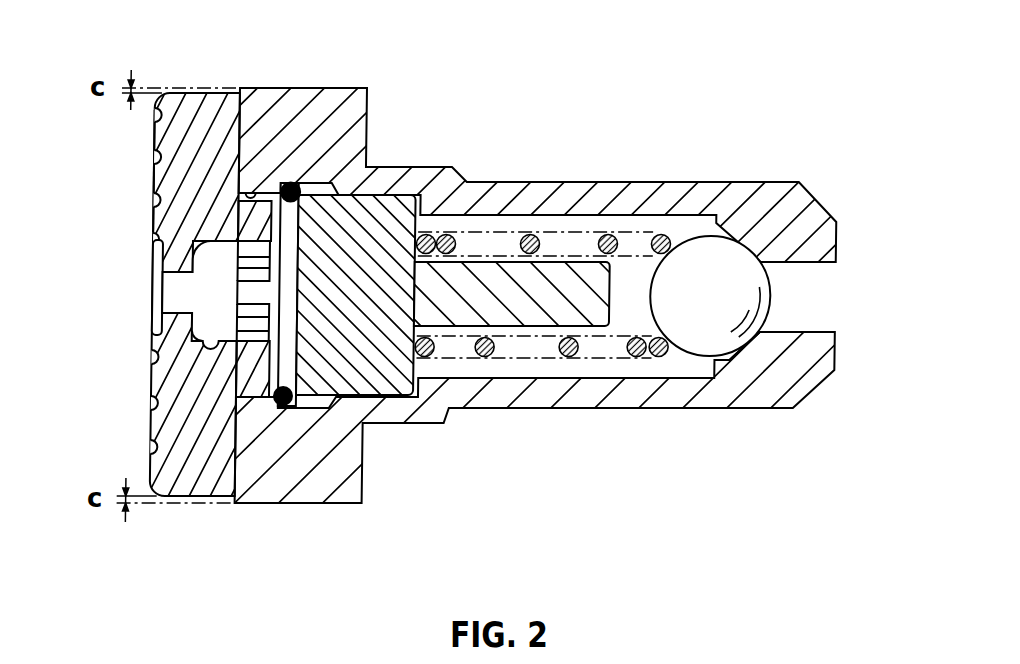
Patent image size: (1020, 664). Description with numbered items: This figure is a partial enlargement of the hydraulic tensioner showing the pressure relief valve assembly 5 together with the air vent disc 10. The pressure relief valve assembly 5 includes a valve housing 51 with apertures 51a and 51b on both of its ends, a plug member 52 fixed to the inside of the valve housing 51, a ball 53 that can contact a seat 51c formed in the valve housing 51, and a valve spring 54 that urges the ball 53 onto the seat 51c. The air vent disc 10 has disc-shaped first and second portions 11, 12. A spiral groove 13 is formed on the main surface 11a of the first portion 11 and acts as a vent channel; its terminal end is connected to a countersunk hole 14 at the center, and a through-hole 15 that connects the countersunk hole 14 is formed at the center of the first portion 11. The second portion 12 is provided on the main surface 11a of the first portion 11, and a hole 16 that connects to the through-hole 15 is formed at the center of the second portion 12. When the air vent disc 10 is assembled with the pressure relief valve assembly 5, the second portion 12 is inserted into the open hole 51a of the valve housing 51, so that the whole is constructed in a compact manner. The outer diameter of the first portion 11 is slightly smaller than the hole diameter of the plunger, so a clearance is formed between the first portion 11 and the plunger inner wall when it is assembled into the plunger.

The pressure relief valve assembly 5 is at (527, 318).
The air vent disc 10 is at (242, 367).
The first portion 11 is at (168, 487).
The main surface 11a is at (155, 175).
The second portion 12 is at (253, 378).
The spiral groove 13 is at (155, 203).
The countersunk hole 14 is at (155, 326).
The through-hole 15 is at (158, 288).
The hole 16 is at (152, 418).
The valve housing 51 is at (325, 486).
The aperture 51a is at (252, 190).
The aperture 51b is at (803, 332).
The seat 51c is at (723, 360).
The plug member 52 is at (382, 390).
The ball 53 is at (697, 348).
The valve spring 54 is at (570, 357).